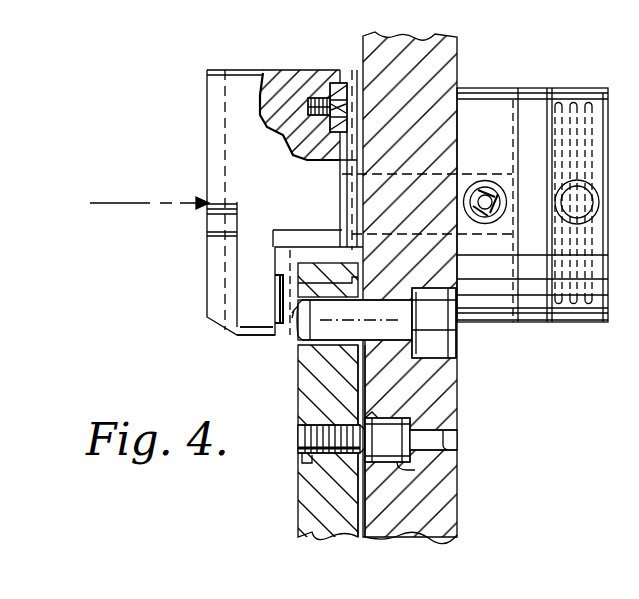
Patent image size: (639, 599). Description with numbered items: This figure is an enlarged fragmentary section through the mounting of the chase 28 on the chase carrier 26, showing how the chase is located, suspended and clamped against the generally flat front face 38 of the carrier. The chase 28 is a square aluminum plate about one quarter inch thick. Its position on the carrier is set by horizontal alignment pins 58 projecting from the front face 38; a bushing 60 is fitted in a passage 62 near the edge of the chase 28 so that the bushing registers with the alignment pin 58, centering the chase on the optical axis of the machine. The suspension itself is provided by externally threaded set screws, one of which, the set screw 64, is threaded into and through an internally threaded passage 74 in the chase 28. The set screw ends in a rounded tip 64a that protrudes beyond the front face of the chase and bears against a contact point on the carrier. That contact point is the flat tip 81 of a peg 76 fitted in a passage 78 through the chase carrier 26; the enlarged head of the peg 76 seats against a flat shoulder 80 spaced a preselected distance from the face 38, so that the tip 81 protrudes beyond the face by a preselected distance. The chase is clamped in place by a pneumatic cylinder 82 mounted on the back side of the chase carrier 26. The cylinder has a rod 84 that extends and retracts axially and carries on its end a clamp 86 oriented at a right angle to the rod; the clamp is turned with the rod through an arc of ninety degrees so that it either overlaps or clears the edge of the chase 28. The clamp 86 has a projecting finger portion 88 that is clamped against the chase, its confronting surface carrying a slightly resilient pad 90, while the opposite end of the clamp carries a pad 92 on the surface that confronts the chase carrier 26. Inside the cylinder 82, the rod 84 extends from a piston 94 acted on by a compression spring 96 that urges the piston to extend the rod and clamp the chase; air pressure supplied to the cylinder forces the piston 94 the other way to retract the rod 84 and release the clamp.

The chase carrier 26 is at (460, 517).
The chase 28 is at (310, 512).
The front face 38 is at (357, 530).
The alignment pin 58 is at (380, 333).
The bushing 60 is at (328, 358).
The passage 62 is at (305, 352).
The set screw 64 is at (302, 432).
The rounded tip 64a is at (375, 455).
The internally threaded passage 74 is at (310, 465).
The peg 76 is at (405, 420).
The passage 78 is at (447, 440).
The shoulder 80 is at (403, 468).
The flat tip 81 is at (382, 418).
The pneumatic cylinder 82 is at (477, 100).
The rod 84 is at (353, 193).
The clamp 86 is at (243, 165).
The finger portion 88 is at (248, 323).
The resilient pad 90 is at (282, 277).
The pad 92 is at (370, 86).
The piston 94 is at (533, 300).
The compression spring 96 is at (582, 303).